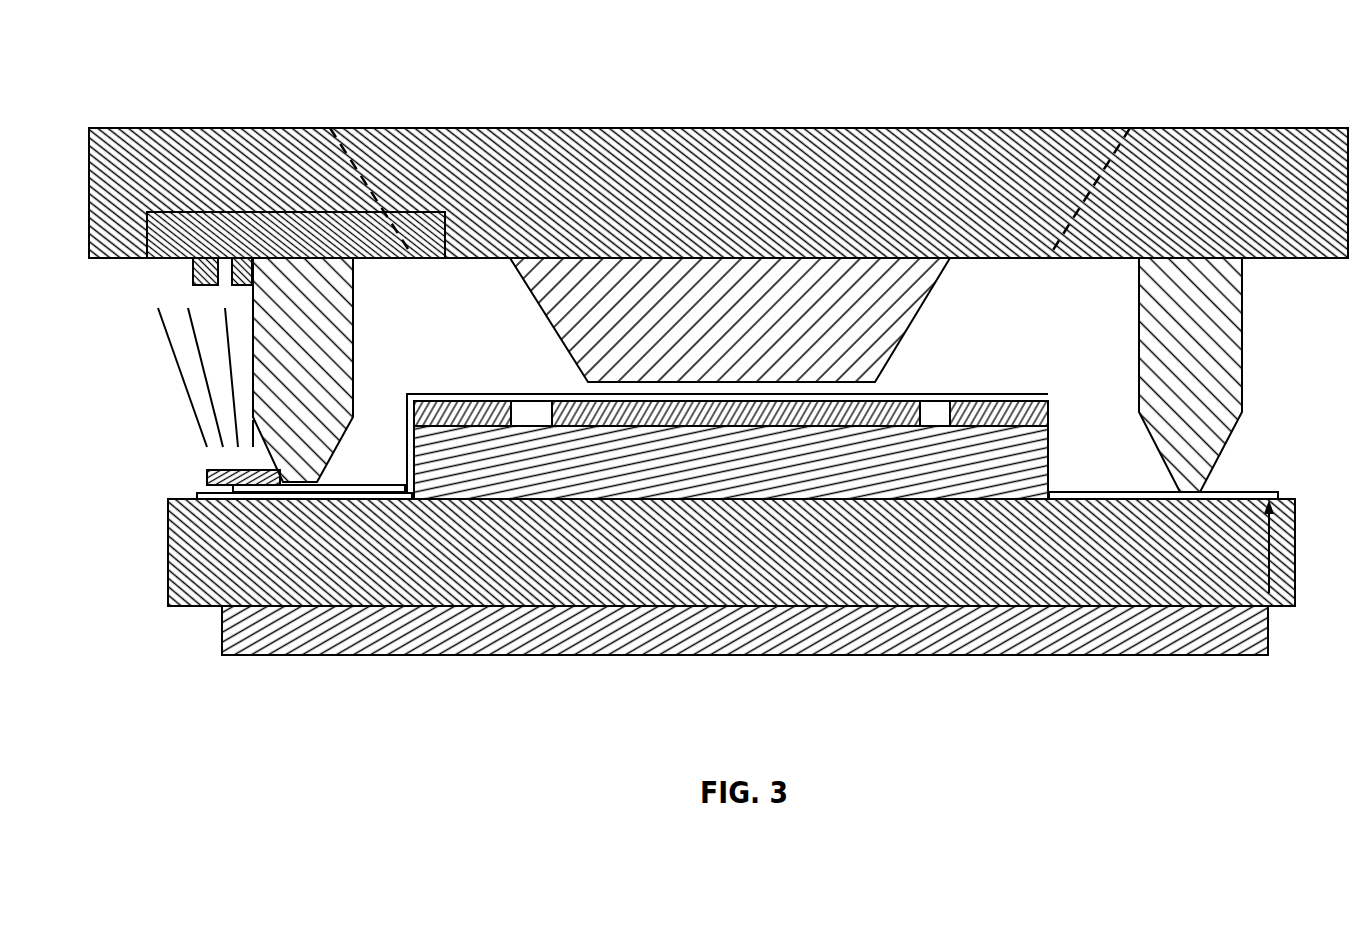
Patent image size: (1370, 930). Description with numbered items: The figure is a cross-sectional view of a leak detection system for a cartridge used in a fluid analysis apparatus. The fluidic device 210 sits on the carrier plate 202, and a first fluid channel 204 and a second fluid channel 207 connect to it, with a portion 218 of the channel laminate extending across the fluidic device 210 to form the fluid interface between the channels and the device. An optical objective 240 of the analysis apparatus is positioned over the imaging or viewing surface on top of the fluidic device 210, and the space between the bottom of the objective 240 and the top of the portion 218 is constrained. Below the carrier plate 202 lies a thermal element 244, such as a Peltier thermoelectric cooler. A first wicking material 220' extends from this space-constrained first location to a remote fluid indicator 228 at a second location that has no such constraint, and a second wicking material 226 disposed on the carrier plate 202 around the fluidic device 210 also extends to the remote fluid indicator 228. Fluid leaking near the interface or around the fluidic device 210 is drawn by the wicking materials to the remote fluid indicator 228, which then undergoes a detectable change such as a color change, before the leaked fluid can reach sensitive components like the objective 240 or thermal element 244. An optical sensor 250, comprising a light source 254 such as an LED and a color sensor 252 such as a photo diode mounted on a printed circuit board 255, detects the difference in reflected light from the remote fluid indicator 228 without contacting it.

The carrier plate 202 is at (945, 578).
The first fluid channel 204 is at (937, 413).
The second fluid channel 207 is at (520, 413).
The fluidic device 210 is at (730, 473).
The portion of channel laminate 218 is at (633, 415).
The first wicking material 220' is at (640, 549).
The second wicking material 226 is at (335, 500).
The remote fluid indicator 228 is at (213, 480).
The objective 240 is at (738, 300).
The thermal element 244 is at (1105, 640).
The optical sensor 250 is at (368, 198).
The color sensor 252 is at (243, 272).
The light source 254 is at (205, 270).
The printed circuit board 255 is at (170, 228).